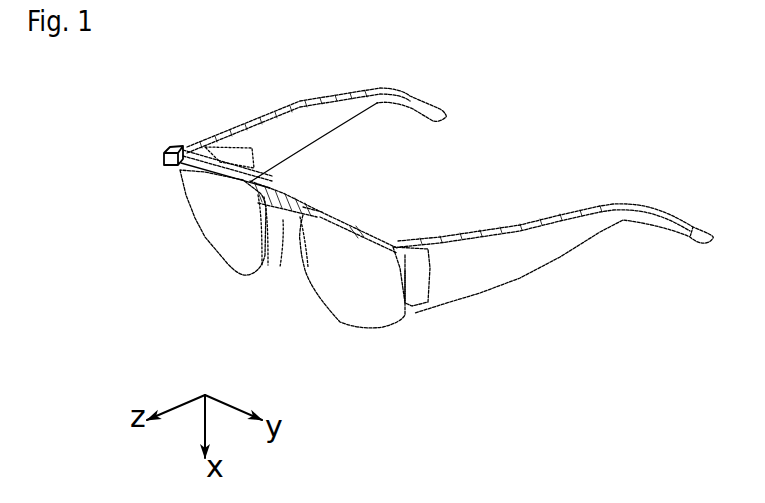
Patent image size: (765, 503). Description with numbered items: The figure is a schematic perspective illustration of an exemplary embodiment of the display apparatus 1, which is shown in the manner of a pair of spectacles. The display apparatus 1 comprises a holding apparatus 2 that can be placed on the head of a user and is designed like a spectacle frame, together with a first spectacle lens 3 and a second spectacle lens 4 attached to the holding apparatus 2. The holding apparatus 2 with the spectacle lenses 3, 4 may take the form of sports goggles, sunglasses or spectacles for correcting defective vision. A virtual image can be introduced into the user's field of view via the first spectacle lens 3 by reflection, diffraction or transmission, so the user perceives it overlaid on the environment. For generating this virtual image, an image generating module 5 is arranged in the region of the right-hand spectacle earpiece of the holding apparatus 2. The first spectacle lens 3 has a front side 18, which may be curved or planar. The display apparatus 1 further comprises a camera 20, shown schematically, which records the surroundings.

The display apparatus 1 is at (421, 197).
The holding apparatus 2 is at (336, 97).
The first spectacle lens 3 is at (223, 232).
The second spectacle lens 4 is at (340, 317).
The image generating module 5 is at (233, 148).
The front side 18 is at (210, 235).
The camera 20 is at (162, 148).